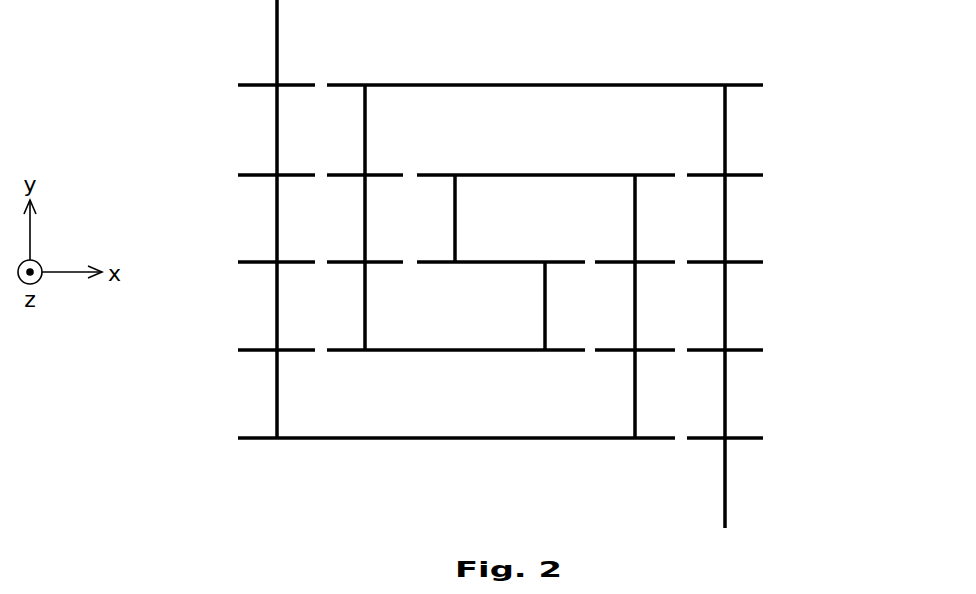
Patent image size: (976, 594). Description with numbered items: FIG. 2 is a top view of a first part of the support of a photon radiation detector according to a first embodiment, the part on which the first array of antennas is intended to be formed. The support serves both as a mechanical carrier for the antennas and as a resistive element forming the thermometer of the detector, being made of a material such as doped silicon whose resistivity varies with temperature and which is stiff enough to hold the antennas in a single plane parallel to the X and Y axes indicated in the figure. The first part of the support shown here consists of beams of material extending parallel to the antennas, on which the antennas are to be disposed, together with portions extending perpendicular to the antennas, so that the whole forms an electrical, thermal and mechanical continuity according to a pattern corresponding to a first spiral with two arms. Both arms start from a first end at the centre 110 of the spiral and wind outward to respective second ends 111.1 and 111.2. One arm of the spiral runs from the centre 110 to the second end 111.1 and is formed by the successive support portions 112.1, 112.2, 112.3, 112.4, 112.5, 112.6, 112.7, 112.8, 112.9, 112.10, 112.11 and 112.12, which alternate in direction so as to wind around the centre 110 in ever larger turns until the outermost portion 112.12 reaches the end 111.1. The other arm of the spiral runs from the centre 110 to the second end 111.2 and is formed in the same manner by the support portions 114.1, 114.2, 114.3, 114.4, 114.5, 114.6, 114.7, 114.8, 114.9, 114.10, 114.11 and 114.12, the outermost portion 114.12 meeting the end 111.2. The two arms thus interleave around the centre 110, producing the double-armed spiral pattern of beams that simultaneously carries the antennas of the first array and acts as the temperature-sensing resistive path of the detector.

The centre 110 is at (495, 265).
The second end 111.1 is at (277, 36).
The second end 111.2 is at (727, 492).
The portion of the support 112.1 is at (475, 265).
The portion of the support 112.2 is at (457, 220).
The portion of the support 112.3 is at (565, 175).
The portion of the support 112.4 is at (638, 205).
The portion of the support 112.5 is at (652, 263).
The portion of the support 112.6 is at (652, 352).
The portion of the support 112.7 is at (555, 440).
The portion of the support 112.8 is at (277, 400).
The portion of the support 112.9 is at (257, 350).
The portion of the support 112.10 is at (257, 262).
The portion of the support 112.11 is at (259, 175).
The portion of the support 112.12 is at (257, 85).
The portion of the support 114.1 is at (533, 262).
The portion of the support 114.2 is at (548, 327).
The portion of the support 114.3 is at (477, 352).
The portion of the support 114.4 is at (365, 328).
The portion of the support 114.5 is at (383, 258).
The portion of the support 114.6 is at (383, 173).
The portion of the support 114.7 is at (410, 85).
The portion of the support 114.8 is at (725, 128).
The portion of the support 114.9 is at (745, 177).
The portion of the support 114.10 is at (745, 264).
The portion of the support 114.11 is at (745, 352).
The portion of the support 114.12 is at (745, 440).